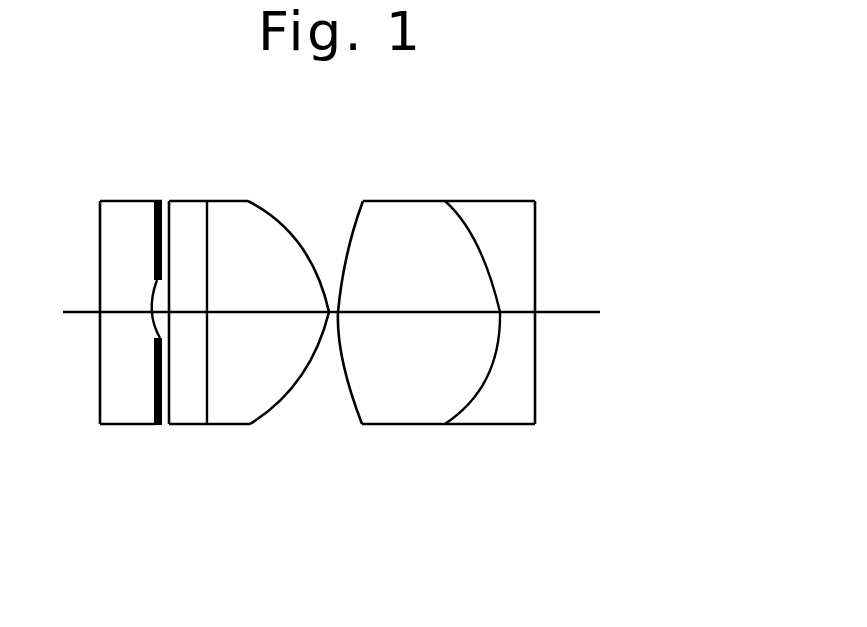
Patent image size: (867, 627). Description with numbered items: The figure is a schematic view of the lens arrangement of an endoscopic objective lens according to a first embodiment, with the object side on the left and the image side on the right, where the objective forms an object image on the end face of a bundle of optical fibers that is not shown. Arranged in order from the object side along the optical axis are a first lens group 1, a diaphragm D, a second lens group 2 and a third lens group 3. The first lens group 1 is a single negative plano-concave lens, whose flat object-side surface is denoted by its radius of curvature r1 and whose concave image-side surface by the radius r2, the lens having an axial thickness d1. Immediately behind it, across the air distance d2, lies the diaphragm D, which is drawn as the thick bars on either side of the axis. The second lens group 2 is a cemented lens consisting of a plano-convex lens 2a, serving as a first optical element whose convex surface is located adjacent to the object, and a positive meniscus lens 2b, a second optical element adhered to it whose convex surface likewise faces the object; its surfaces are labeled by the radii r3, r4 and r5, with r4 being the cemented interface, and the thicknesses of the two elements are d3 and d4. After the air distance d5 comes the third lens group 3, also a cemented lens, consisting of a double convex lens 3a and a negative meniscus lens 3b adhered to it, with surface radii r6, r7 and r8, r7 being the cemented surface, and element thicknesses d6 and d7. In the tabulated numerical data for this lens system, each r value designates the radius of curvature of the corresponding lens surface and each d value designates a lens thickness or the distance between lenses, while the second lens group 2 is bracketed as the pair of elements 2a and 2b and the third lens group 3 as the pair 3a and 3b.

The first lens group 1 is at (100, 303).
The diaphragm D is at (155, 425).
The second lens group 2 is at (249, 352).
The plano-convex lens 2a is at (216, 325).
The positive meniscus lens 2b is at (268, 325).
The third lens group 3 is at (440, 352).
The double convex lens 3a is at (419, 325).
The negative meniscus lens 3b is at (493, 325).
The radius of curvature of lens surface r1 is at (100, 201).
The radius of curvature of lens surface r2 is at (156, 280).
The radius of curvature of lens surface r3 is at (170, 278).
The radius of curvature of lens surface r4 is at (207, 200).
The radius of curvature of lens surface r5 is at (248, 201).
The radius of curvature of lens surface r6 is at (363, 201).
The radius of curvature of lens surface r7 is at (445, 201).
The radius of curvature of lens surface r8 is at (535, 201).
The lens thickness d1 is at (117, 313).
The distance between lenses d2 is at (170, 346).
The lens thickness d3 is at (193, 314).
The lens thickness d4 is at (263, 313).
The distance between lenses d5 is at (327, 313).
The lens thickness d6 is at (420, 313).
The lens thickness d7 is at (513, 313).